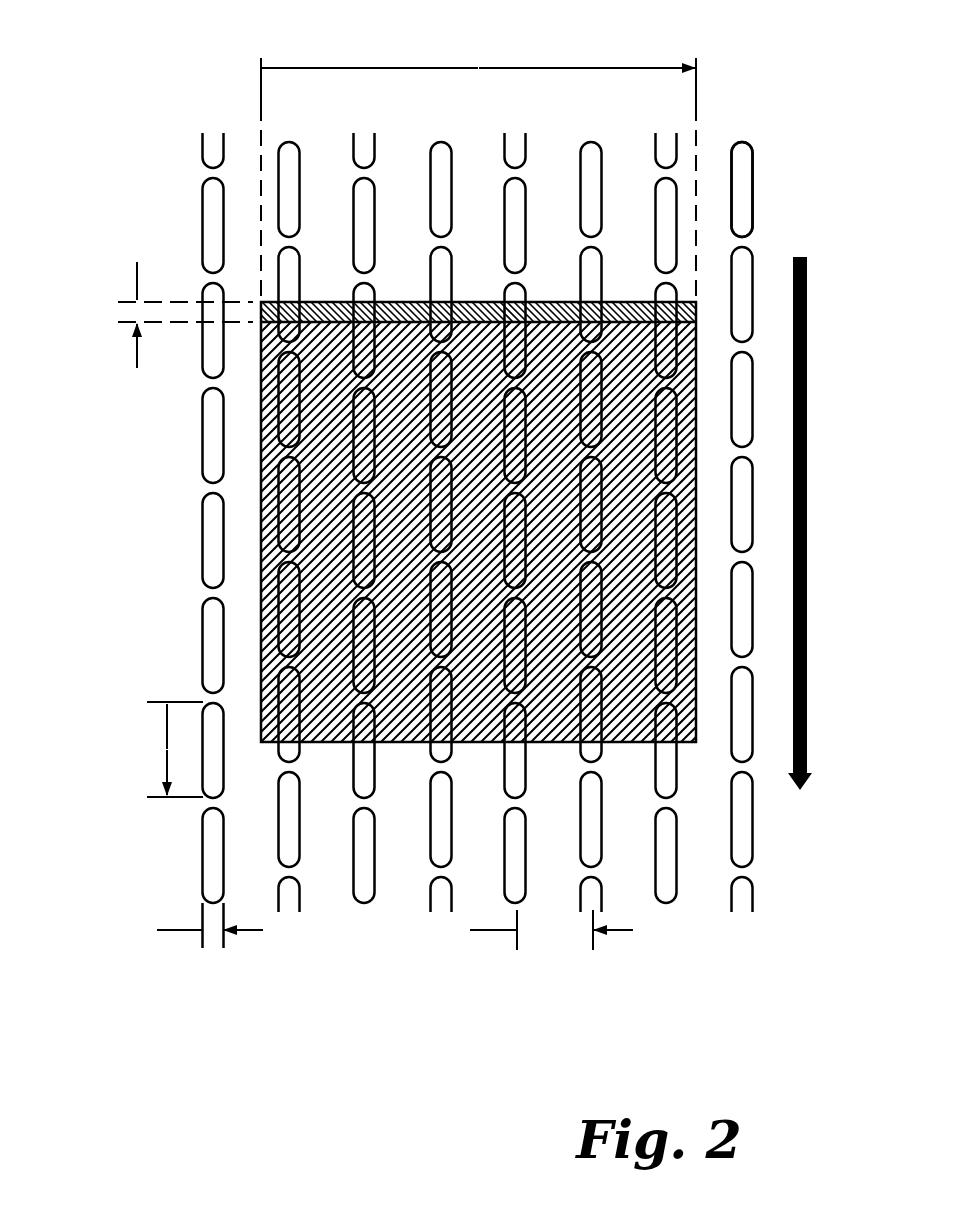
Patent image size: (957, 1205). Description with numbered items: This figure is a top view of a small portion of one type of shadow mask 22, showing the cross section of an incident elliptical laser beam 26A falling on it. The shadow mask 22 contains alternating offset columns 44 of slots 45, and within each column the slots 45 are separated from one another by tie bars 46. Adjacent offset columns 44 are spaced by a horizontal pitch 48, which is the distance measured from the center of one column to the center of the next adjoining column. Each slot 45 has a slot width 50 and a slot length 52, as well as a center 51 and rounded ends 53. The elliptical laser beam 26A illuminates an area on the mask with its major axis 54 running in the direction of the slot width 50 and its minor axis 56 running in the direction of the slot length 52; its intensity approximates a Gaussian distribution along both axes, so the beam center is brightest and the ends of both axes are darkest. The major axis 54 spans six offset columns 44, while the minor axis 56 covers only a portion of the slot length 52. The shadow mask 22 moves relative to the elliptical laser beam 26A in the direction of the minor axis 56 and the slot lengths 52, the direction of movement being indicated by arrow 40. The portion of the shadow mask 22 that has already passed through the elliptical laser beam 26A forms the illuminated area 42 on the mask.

The shadow mask 22 is at (450, 538).
The elliptical laser beam 26A is at (345, 278).
The arrow 40 is at (812, 615).
The illuminated area 42 is at (478, 502).
The offset columns 44 is at (290, 912).
The slots 45 is at (203, 520).
The tie bars 46 is at (207, 697).
The horizontal pitch 48 is at (548, 932).
The slot width 50 is at (170, 561).
The center 51 is at (776, 498).
The slot length 52 is at (160, 745).
The rounded ends 53 is at (743, 140).
The major axis 54 is at (480, 62).
The minor axis 56 is at (128, 311).